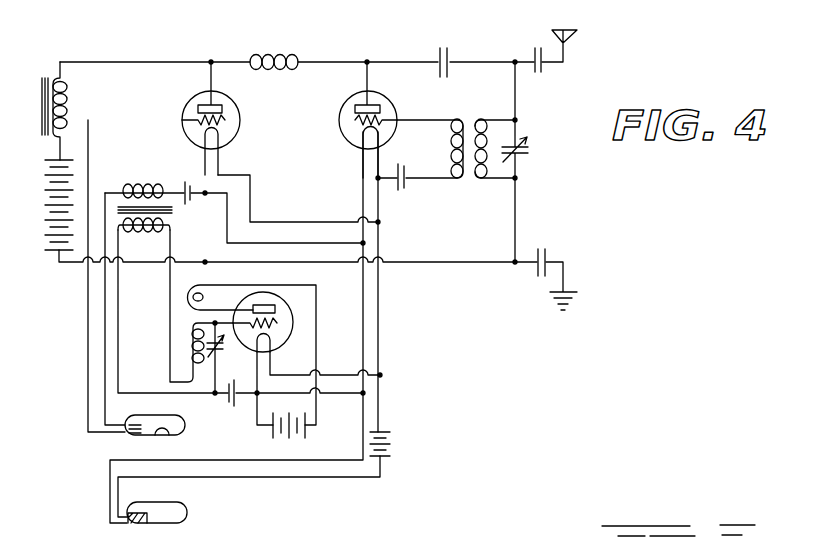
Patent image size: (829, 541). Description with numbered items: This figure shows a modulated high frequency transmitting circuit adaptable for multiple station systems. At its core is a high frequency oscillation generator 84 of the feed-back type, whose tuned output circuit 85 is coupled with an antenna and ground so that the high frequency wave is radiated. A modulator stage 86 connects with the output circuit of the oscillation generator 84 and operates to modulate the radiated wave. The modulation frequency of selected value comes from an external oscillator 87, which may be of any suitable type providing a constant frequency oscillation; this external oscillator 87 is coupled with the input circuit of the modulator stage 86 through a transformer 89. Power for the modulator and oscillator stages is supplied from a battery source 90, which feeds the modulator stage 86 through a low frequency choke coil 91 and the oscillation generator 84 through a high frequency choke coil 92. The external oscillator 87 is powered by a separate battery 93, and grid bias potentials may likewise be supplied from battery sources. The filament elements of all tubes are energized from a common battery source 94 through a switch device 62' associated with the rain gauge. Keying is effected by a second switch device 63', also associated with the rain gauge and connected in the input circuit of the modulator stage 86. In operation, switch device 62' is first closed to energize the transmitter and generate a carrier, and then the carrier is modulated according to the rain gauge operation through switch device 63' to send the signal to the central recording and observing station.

The high frequency oscillation generator 84 is at (412, 90).
The tuned output circuit 85 is at (503, 130).
The modulator stage 86 is at (264, 105).
The external oscillator 87 is at (301, 317).
The transformer 89 is at (177, 214).
The battery source 90 is at (41, 203).
The low frequency choke coil 91 is at (67, 98).
The high frequency choke coil 92 is at (283, 55).
The separate battery 93 is at (268, 431).
The common battery source 94 is at (396, 444).
The switch device 63' is at (136, 437).
The switch device 62' is at (183, 509).